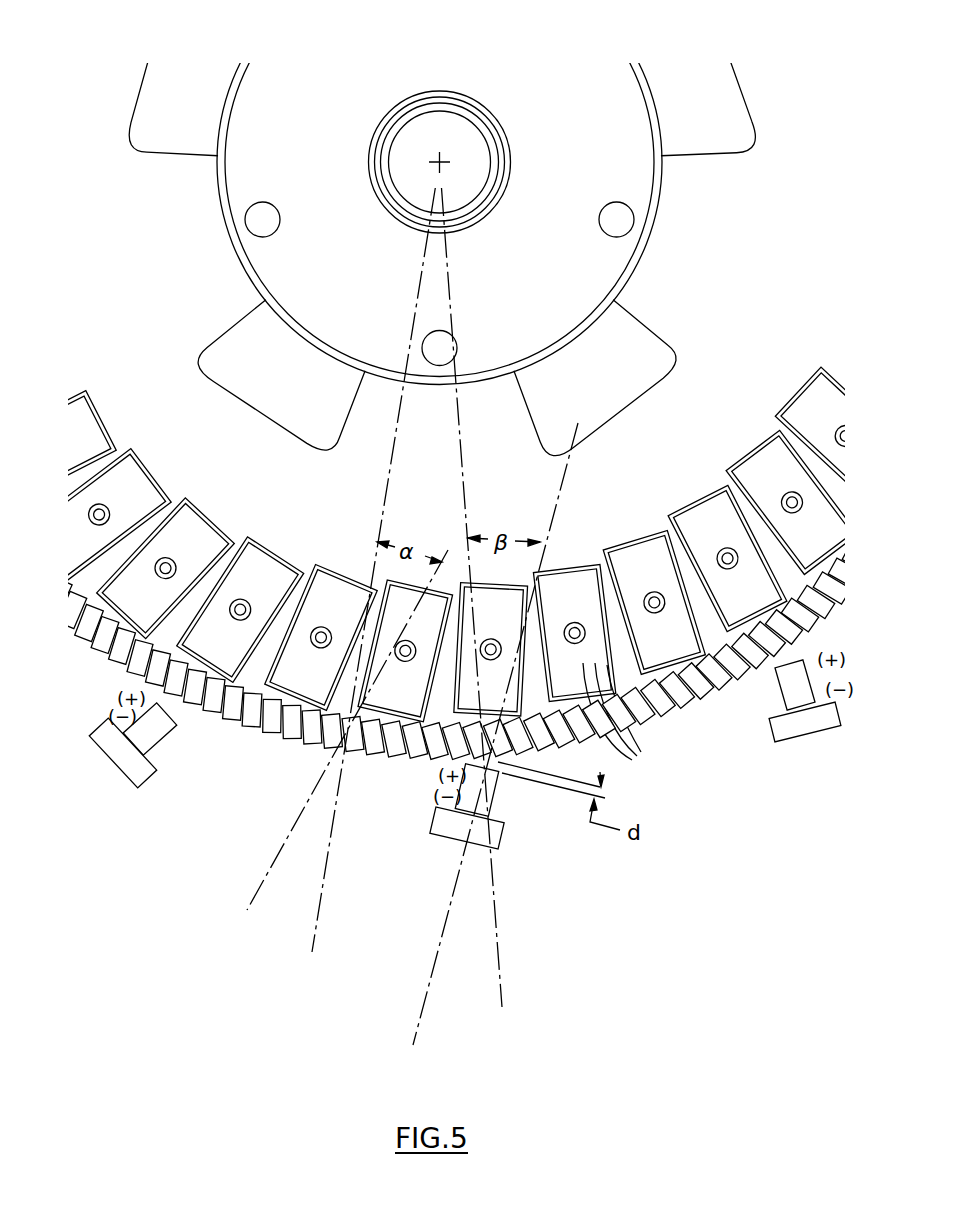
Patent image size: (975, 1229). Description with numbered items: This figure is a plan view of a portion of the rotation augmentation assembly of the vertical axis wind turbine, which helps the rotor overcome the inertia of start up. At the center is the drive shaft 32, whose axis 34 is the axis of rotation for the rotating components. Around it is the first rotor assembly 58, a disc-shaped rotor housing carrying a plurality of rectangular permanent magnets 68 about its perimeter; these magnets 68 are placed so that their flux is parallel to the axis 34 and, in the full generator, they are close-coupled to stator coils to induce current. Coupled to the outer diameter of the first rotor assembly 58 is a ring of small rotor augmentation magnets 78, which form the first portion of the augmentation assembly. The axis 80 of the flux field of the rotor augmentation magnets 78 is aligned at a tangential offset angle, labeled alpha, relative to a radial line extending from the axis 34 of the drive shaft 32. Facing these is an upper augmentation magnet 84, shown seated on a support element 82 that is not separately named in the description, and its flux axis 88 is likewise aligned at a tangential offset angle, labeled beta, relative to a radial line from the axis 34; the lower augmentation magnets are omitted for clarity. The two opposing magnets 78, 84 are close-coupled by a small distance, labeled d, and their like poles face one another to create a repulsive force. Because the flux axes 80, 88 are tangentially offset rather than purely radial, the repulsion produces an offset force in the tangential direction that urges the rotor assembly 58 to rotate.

The drive shaft 32 is at (482, 205).
The axis of the drive shaft 34 is at (442, 166).
The first rotor assembly 58 is at (303, 499).
The permanent magnets 68 is at (710, 492).
The rotor augmentation magnets 78 is at (363, 762).
The axis of the flux field of the rotor augmentation magnets 80 is at (262, 882).
The sensor mounting board 82 is at (147, 785).
The upper augmentation magnets 84 is at (168, 735).
The axis of the flux field for the upper augmentation magnet 88 is at (423, 1007).